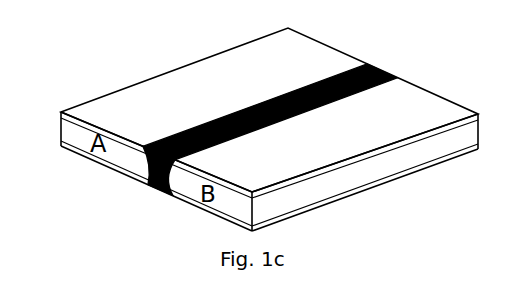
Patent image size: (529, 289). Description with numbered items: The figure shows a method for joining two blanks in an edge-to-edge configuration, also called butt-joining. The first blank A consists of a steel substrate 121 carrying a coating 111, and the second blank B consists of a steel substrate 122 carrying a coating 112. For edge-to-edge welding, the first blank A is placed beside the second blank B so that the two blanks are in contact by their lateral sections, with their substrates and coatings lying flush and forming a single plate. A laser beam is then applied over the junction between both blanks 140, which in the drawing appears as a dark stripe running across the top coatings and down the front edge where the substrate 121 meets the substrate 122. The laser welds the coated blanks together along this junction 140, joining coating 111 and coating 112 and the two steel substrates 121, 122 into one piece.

The coating 111 is at (128, 140).
The coating 112 is at (455, 128).
The steel substrate 121 is at (77, 138).
The steel substrate 122 is at (315, 190).
The junction between both blanks 140 is at (155, 190).